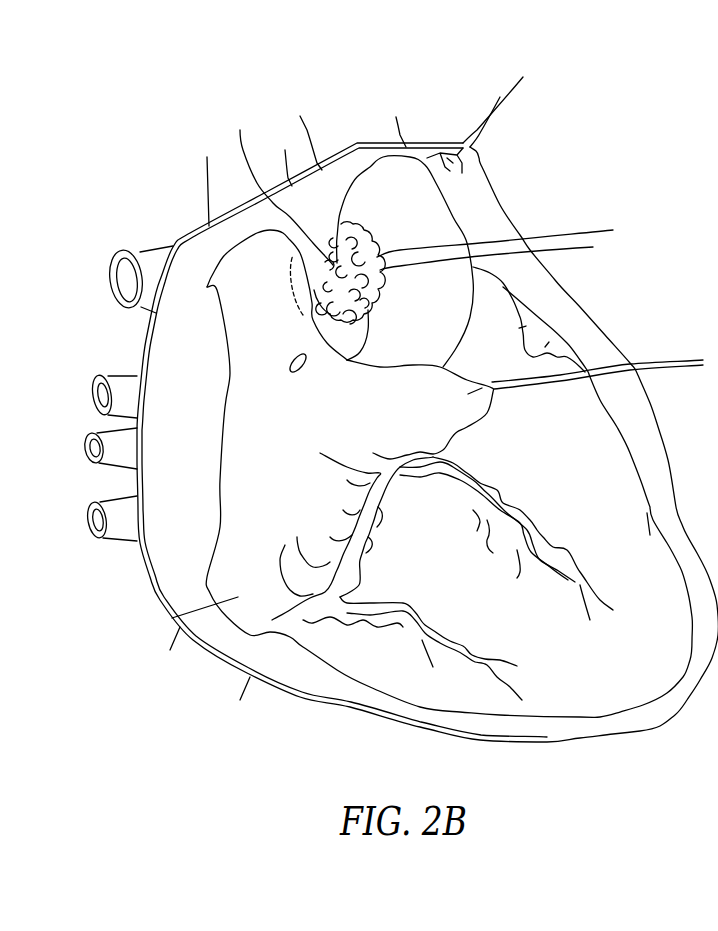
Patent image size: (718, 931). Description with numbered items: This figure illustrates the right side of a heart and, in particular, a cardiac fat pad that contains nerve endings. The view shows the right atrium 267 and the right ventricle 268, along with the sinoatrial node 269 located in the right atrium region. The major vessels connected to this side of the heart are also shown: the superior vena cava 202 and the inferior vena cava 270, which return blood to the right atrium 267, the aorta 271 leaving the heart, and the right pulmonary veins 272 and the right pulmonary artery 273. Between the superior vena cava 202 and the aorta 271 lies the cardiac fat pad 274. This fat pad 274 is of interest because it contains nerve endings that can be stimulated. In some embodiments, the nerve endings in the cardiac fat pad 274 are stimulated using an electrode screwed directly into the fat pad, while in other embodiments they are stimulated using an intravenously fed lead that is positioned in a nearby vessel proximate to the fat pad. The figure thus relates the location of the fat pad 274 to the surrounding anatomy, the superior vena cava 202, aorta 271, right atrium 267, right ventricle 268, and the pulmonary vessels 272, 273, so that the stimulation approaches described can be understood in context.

The superior vena cava 202 is at (220, 187).
The right atrium 267 is at (330, 437).
The right ventricle 268 is at (502, 612).
The sinoatrial node 269 is at (290, 361).
The inferior vena cava 270 is at (172, 618).
The aorta 271 is at (433, 222).
The right pulmonary veins 272 is at (90, 503).
The right pulmonary artery 273 is at (370, 315).
The cardiac fat pad 274 is at (278, 183).